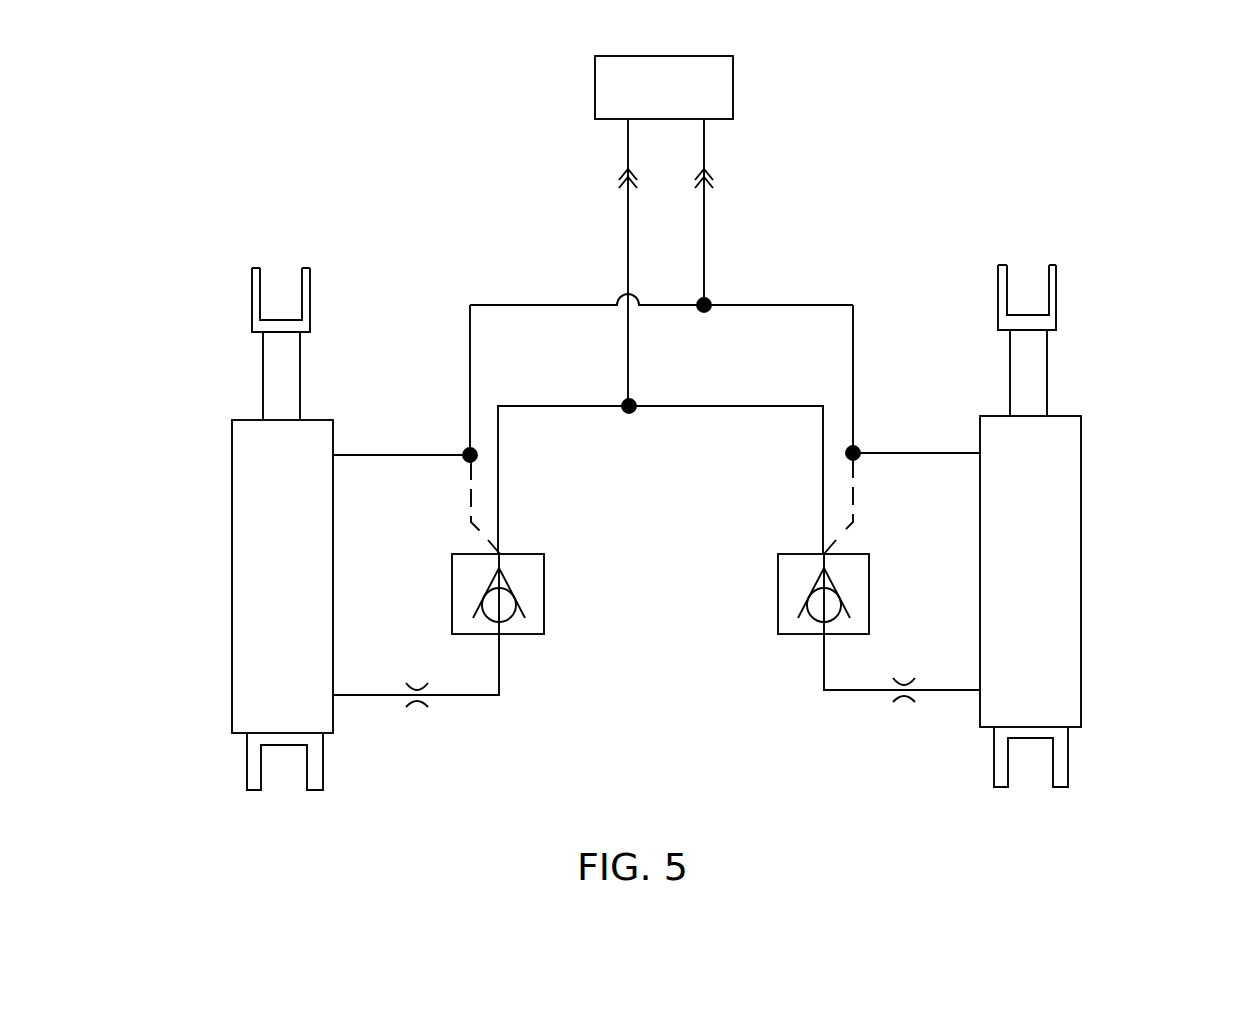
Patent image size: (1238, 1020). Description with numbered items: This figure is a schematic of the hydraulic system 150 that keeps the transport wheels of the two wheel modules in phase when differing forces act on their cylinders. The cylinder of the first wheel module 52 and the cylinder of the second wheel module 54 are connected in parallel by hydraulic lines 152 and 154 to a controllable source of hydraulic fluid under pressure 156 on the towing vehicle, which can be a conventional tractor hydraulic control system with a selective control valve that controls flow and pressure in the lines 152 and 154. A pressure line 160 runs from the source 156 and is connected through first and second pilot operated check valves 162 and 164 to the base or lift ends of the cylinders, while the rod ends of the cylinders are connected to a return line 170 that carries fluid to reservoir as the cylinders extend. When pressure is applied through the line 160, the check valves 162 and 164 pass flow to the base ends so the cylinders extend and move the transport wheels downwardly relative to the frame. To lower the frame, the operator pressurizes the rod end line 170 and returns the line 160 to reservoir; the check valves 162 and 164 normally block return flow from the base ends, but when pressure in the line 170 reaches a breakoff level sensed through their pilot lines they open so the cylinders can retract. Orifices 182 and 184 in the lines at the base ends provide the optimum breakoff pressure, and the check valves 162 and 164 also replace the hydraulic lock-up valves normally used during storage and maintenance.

The hydraulic system 150 is at (358, 155).
The hydraulic line 152 is at (810, 430).
The hydraulic line 154 is at (442, 358).
The controllable source of hydraulic fluid under pressure 156 is at (588, 75).
The pressure line 160 is at (628, 382).
The return line 170 is at (705, 246).
The pilot operated check valve 162 is at (808, 554).
The pilot operated check valve 164 is at (523, 554).
The orifice 182 is at (906, 698).
The orifice 184 is at (415, 700).
The first wheel module 52 is at (1092, 526).
The second wheel module 54 is at (225, 529).